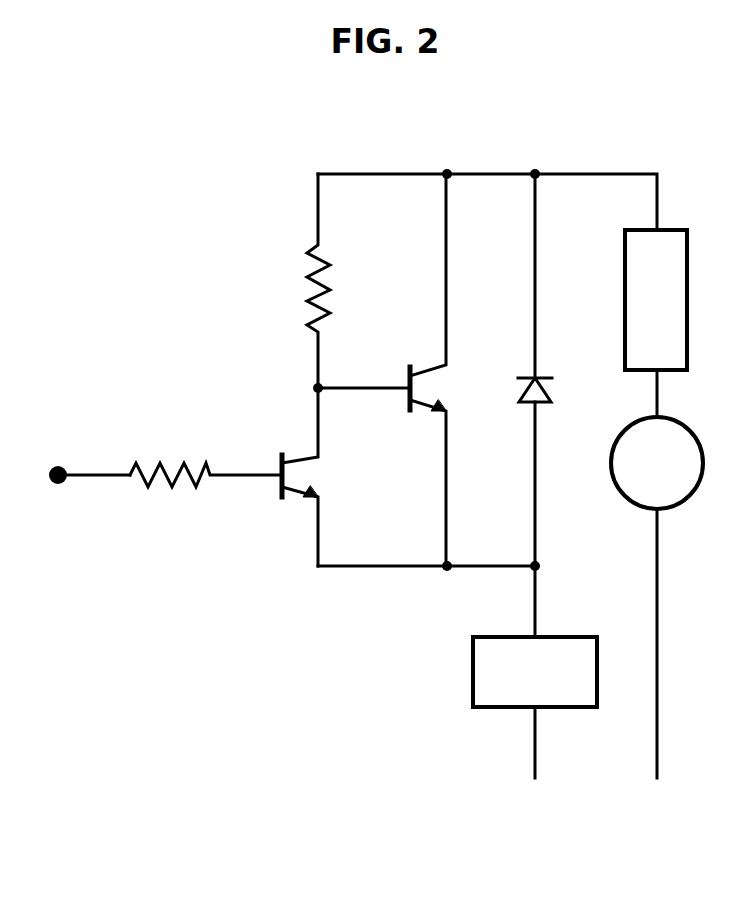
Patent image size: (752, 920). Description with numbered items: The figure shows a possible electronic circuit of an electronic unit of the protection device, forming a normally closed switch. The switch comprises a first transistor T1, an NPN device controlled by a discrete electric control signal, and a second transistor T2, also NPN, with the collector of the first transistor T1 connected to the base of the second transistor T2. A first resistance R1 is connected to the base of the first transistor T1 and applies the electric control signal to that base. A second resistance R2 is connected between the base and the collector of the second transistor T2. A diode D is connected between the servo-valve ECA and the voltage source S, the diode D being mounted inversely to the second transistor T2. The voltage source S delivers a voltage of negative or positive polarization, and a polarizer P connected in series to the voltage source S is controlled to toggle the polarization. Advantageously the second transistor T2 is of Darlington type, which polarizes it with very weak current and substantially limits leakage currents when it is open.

The first resistance R1 is at (206, 462).
The second resistance R2 is at (292, 281).
The first transistor T1 is at (318, 477).
The second transistor T2 is at (445, 370).
The diode D is at (547, 370).
The servo-valve ECA is at (535, 672).
The polarizer P is at (656, 323).
The voltage source S is at (657, 597).